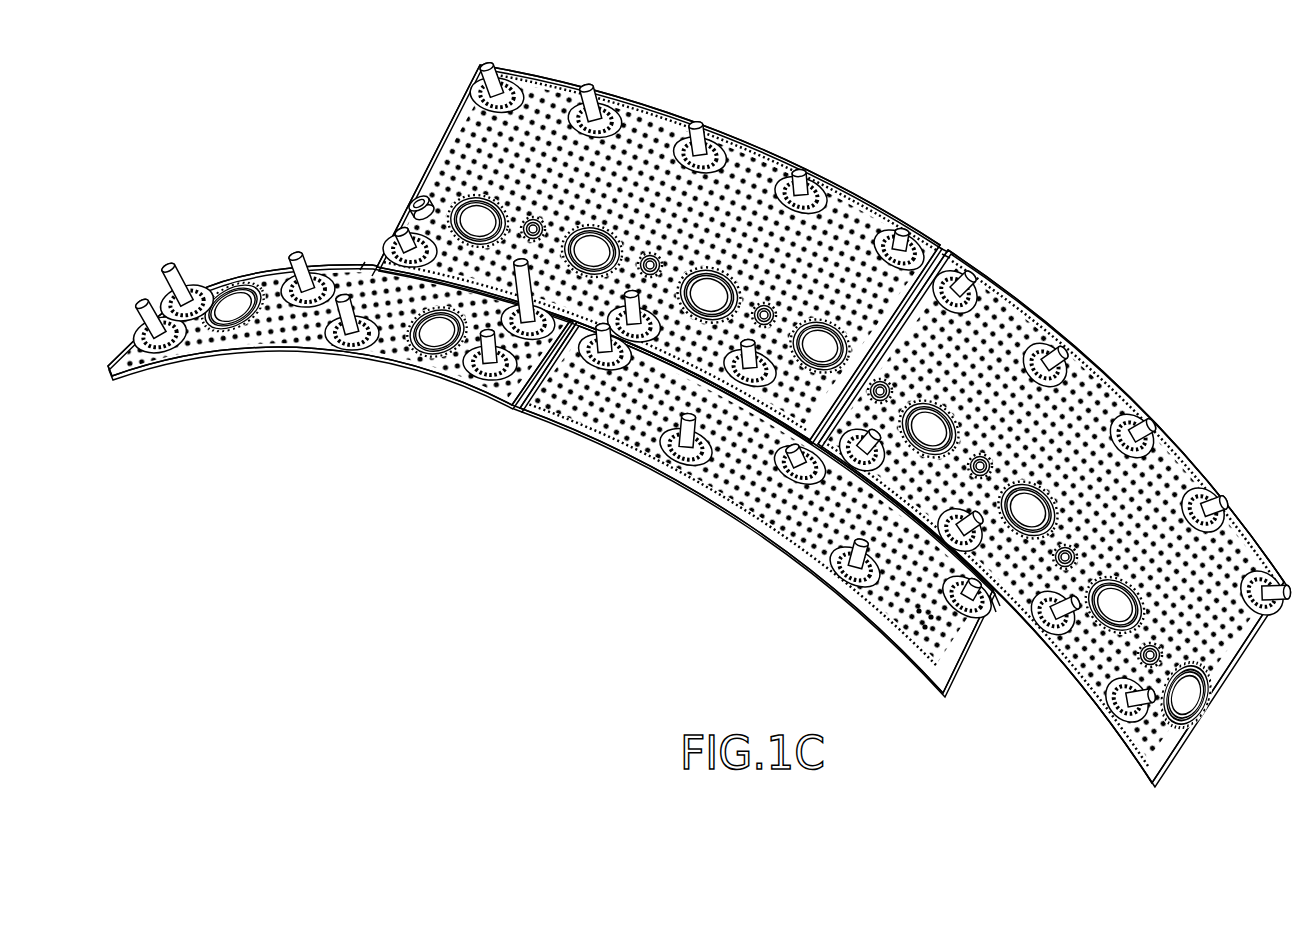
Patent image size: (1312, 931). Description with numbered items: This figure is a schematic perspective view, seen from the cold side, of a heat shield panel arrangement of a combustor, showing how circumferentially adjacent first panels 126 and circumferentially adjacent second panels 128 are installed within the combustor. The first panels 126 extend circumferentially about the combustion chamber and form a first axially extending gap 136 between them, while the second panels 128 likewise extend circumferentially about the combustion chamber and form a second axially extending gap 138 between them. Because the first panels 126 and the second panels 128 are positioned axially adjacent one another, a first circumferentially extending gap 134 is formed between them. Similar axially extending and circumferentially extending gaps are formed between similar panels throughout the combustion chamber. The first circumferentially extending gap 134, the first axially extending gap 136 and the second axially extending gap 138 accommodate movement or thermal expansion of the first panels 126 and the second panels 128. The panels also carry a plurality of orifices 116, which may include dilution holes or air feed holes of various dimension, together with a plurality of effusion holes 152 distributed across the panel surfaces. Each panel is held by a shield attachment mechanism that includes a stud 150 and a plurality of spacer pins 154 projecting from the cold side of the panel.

The orifices 116 is at (1110, 610).
The first panels 126 is at (272, 348).
The second panels 128 is at (736, 120).
The first circumferentially extending gap 134 is at (362, 262).
The first axially extending gap 136 is at (515, 400).
The second axially extending gap 138 is at (948, 245).
The stud 150 is at (877, 613).
The effusion holes 152 is at (927, 617).
The spacer pins 154 is at (843, 597).